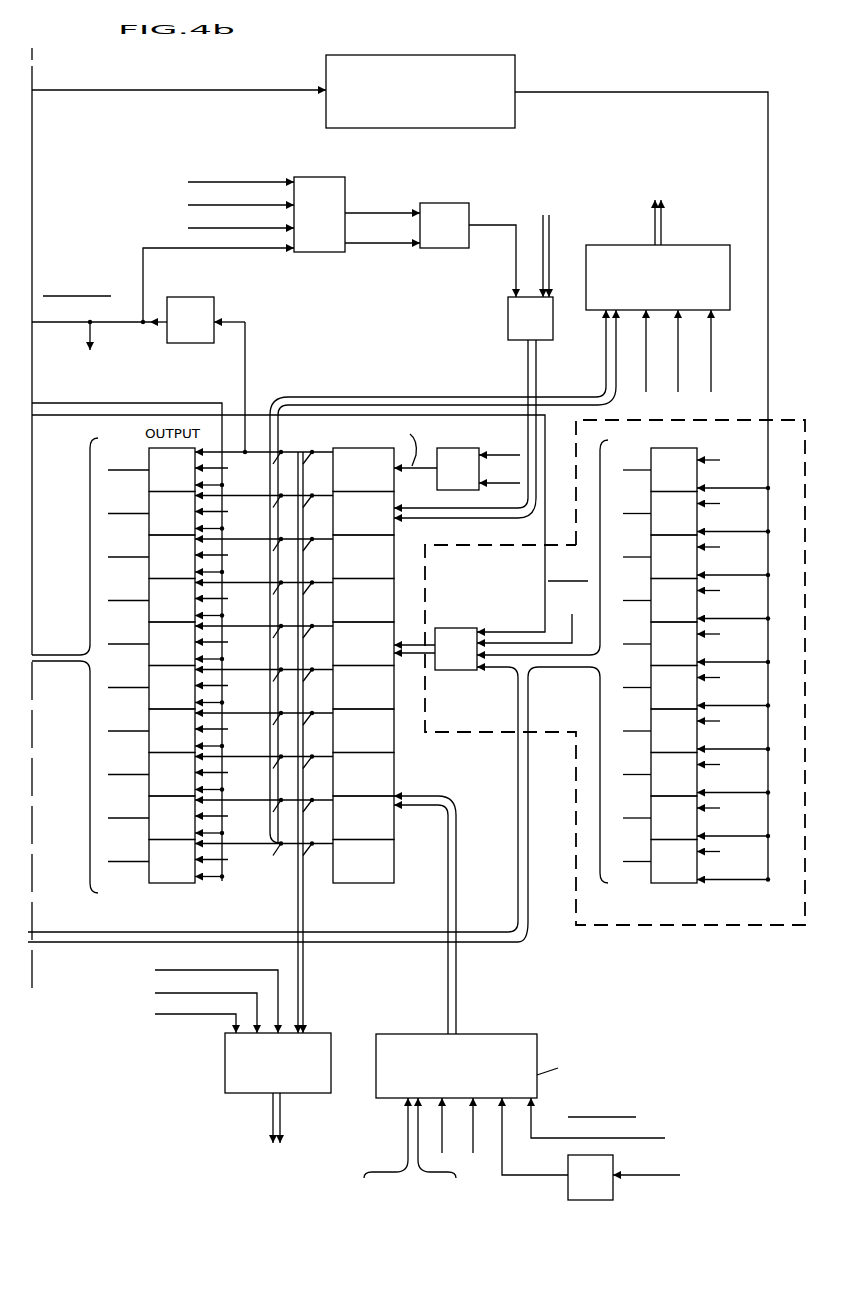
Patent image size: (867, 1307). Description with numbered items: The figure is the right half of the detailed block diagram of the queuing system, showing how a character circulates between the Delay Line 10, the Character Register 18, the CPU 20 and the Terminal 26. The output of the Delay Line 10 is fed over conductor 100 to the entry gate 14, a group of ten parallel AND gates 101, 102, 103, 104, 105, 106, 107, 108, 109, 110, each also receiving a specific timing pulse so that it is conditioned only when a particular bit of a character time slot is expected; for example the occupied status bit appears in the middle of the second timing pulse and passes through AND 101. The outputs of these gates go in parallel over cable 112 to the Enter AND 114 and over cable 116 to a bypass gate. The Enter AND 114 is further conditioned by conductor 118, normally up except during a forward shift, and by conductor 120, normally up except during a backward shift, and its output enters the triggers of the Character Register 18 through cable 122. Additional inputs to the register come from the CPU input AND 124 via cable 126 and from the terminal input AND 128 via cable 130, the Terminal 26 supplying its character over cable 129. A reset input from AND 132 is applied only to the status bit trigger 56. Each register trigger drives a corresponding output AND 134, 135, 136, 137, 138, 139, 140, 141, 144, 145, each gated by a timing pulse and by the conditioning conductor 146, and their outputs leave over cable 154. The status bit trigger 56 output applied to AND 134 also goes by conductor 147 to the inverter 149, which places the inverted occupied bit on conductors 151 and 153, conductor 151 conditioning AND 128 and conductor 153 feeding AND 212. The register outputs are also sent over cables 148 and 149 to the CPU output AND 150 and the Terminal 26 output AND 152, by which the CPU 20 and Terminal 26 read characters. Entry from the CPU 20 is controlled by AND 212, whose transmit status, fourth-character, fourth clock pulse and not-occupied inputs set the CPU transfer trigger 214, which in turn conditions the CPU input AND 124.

The Delay Line 10 is at (515, 105).
The conductor 100 is at (700, 90).
The AND 212 is at (332, 177).
The conductor 153 is at (143, 248).
The CPU transfer trigger 214 is at (435, 248).
The CPU 20 is at (610, 237).
The CPU input AND 124 is at (510, 340).
The cable 126 is at (538, 358).
The CPU output AND 150 is at (695, 250).
The cable 148 is at (400, 395).
The inverter 149 is at (196, 297).
The conductor 151 is at (112, 322).
The conductor 147 is at (250, 357).
The conductor 146 is at (208, 400).
The conductor 118 is at (545, 562).
The cable 154 is at (68, 652).
The output AND 134 is at (149, 460).
The output AND 135 is at (149, 504).
The output AND 136 is at (149, 547).
The output AND 137 is at (149, 590).
The output AND 138 is at (149, 634).
The output AND 139 is at (149, 678).
The output AND 140 is at (149, 721).
The output AND 141 is at (149, 764).
The output AND 144 is at (149, 808).
The output AND 145 is at (149, 852).
The status bit trigger 56 is at (346, 448).
The Character Register 18 is at (360, 888).
The AND 132 is at (458, 448).
The entry gate 14 is at (668, 933).
The AND 101 is at (651, 456).
The AND 102 is at (651, 500).
The AND 103 is at (651, 543).
The AND 104 is at (651, 586).
The AND 105 is at (651, 630).
The AND 106 is at (651, 674).
The AND 107 is at (651, 717).
The AND 108 is at (651, 760).
The AND 109 is at (651, 804).
The AND 110 is at (651, 848).
The Enter AND 114 is at (462, 670).
The cable 122 is at (412, 640).
The conductor 120 is at (532, 612).
The cable 112 is at (510, 680).
The cable 116 is at (160, 933).
The cable 130 is at (455, 905).
The Terminal output AND 152 is at (318, 1033).
The Terminal 26 is at (274, 1131).
The terminal input AND 128 is at (500, 1040).
The cable 129 is at (405, 1124).